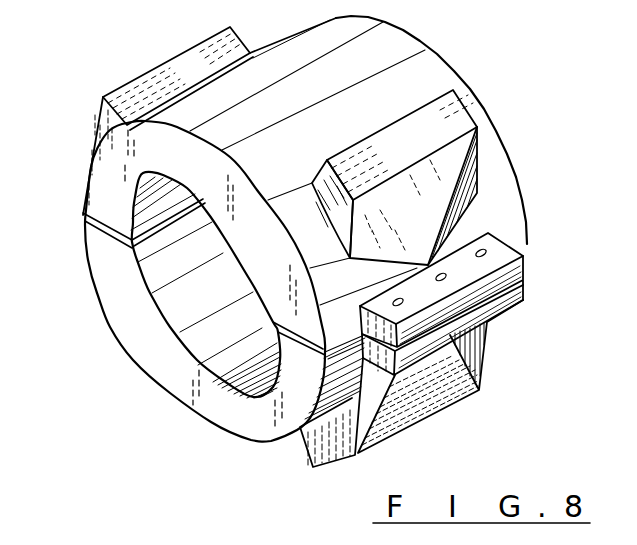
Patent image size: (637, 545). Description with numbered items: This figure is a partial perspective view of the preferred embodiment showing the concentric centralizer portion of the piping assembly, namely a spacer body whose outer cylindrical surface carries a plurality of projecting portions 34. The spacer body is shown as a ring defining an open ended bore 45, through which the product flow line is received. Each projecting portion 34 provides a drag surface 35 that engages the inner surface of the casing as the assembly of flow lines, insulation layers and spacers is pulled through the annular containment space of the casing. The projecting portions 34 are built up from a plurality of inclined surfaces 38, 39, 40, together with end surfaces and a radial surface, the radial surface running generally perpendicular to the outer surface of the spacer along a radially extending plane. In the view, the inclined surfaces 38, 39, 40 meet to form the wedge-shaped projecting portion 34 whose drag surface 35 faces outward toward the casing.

The projecting portion 34 is at (318, 180).
The drag surface 35 is at (447, 117).
The inclined surface 38 is at (420, 207).
The inclined surface 39 is at (395, 280).
The inclined surface 40 is at (473, 163).
The open ended bore 45 is at (196, 305).